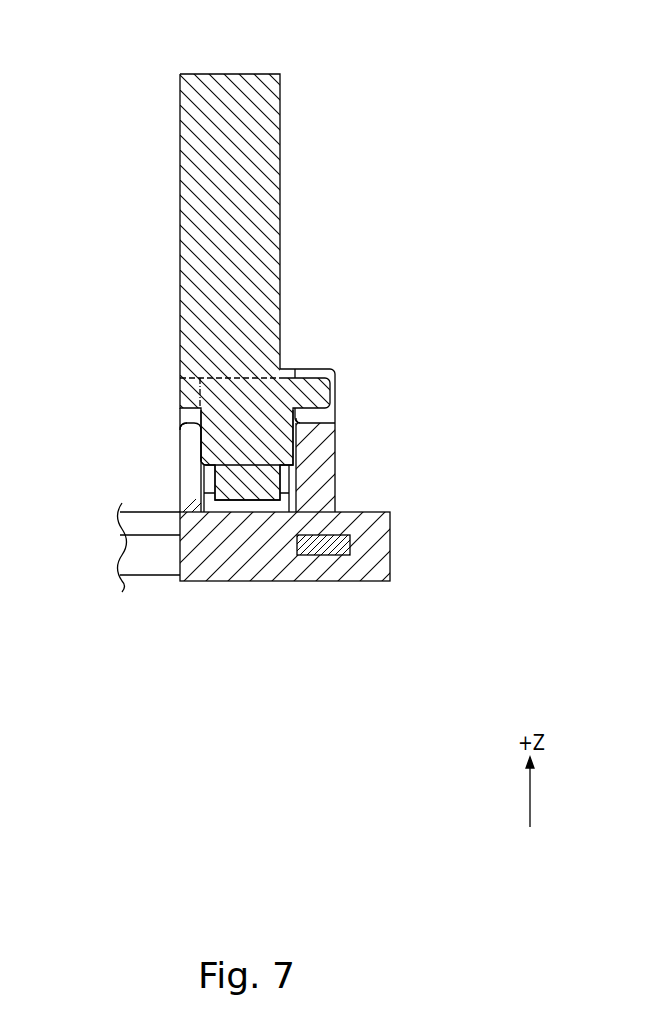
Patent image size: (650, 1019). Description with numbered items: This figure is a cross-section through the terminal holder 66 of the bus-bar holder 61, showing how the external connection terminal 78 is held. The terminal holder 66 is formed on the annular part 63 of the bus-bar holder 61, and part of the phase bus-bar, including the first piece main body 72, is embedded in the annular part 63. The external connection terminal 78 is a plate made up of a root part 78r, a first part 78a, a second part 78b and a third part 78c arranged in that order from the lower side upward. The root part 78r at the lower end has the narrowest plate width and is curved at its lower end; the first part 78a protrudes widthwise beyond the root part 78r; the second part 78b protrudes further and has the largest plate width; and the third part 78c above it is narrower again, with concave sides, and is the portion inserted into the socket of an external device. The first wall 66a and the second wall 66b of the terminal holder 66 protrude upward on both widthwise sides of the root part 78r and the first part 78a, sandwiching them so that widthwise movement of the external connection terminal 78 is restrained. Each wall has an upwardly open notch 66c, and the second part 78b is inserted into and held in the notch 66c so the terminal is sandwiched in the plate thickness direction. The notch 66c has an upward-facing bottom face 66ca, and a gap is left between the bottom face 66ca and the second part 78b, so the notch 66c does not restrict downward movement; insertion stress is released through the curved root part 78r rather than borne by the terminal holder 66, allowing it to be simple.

The external connection terminal 78 is at (325, 273).
The third part 78c is at (193, 287).
The second part 78b is at (190, 390).
The first part 78a is at (203, 452).
The root part 78r is at (205, 496).
The terminal holder 66 is at (226, 412).
The notch 66c is at (336, 415).
The bottom face 66ca is at (332, 424).
The first wall 66a is at (190, 480).
The second wall 66b is at (323, 465).
The bus-bar holder 61 is at (287, 536).
The annular part 63 is at (390, 565).
The first piece main body 72 is at (338, 556).